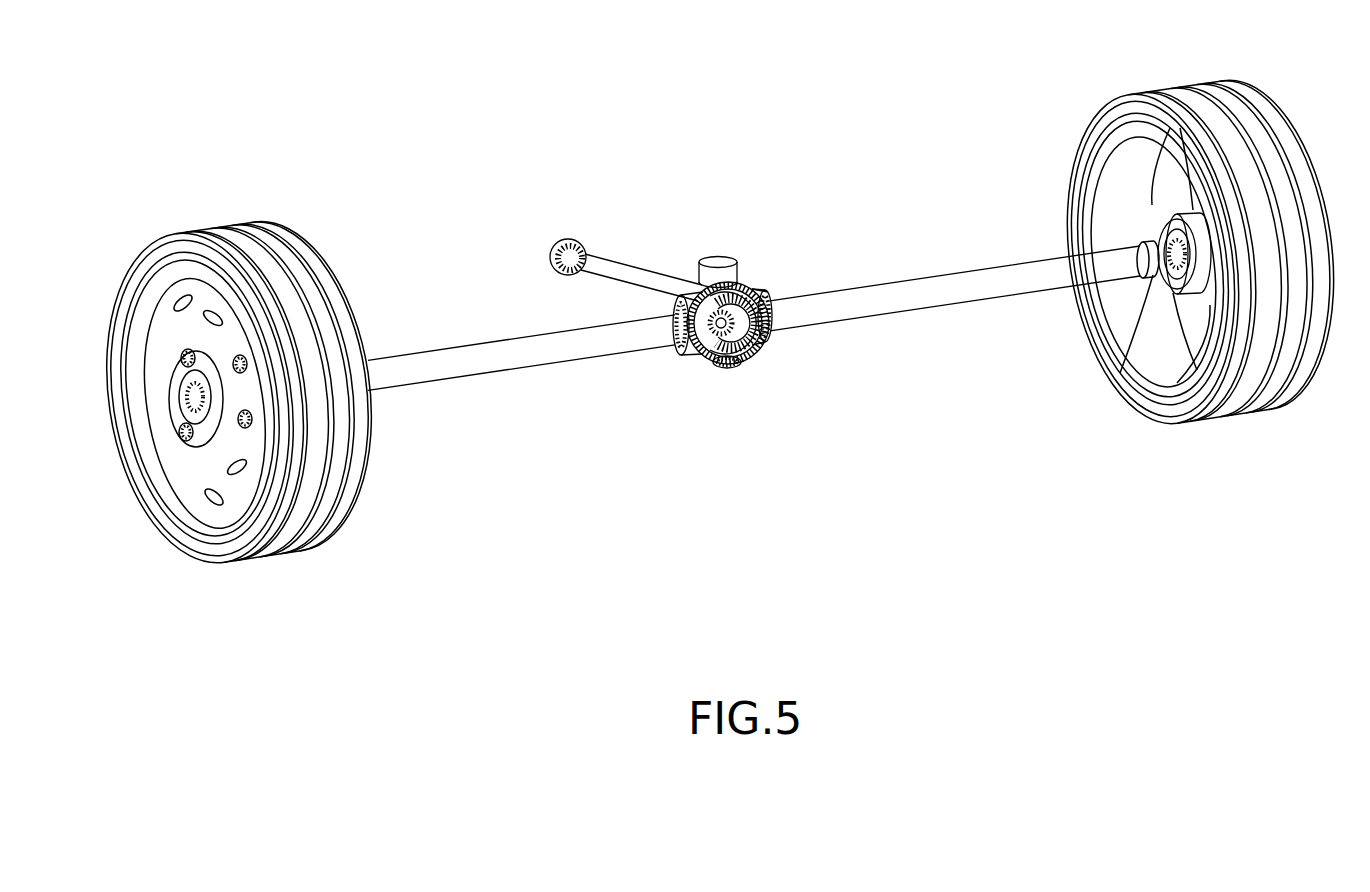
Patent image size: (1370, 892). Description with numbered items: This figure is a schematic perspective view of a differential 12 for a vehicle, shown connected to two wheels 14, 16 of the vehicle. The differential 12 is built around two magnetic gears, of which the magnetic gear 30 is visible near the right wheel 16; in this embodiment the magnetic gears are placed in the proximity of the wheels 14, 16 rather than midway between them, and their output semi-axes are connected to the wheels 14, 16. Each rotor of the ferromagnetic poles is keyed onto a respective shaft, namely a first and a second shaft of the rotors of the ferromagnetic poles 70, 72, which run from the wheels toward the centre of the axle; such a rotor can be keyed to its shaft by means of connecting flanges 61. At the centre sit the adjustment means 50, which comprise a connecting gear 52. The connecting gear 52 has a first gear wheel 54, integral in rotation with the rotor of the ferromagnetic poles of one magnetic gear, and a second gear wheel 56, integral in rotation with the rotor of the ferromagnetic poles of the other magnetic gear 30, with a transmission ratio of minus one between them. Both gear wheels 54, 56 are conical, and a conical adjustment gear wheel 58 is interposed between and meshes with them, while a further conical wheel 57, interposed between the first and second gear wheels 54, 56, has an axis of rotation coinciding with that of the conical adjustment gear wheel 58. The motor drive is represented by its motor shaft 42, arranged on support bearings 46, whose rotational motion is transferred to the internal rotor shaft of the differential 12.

The differential 12 is at (768, 296).
The wheel 14 is at (259, 567).
The wheel 16 is at (1209, 429).
The magnetic gear 30 is at (1141, 231).
The motor shaft 42 is at (608, 267).
The support bearings 46 is at (551, 247).
The adjustment means 50 is at (713, 248).
The connecting gear 52 is at (686, 279).
The first gear wheel 54 is at (700, 365).
The second gear wheel 56 is at (762, 352).
The further conical wheel 57 is at (722, 370).
The conical adjustment gear wheel 58 is at (761, 290).
The connecting flanges 61 is at (1163, 300).
The first shaft of the rotors of the ferromagnetic poles 70 is at (432, 360).
The second shaft of the rotors of the ferromagnetic poles 72 is at (950, 287).